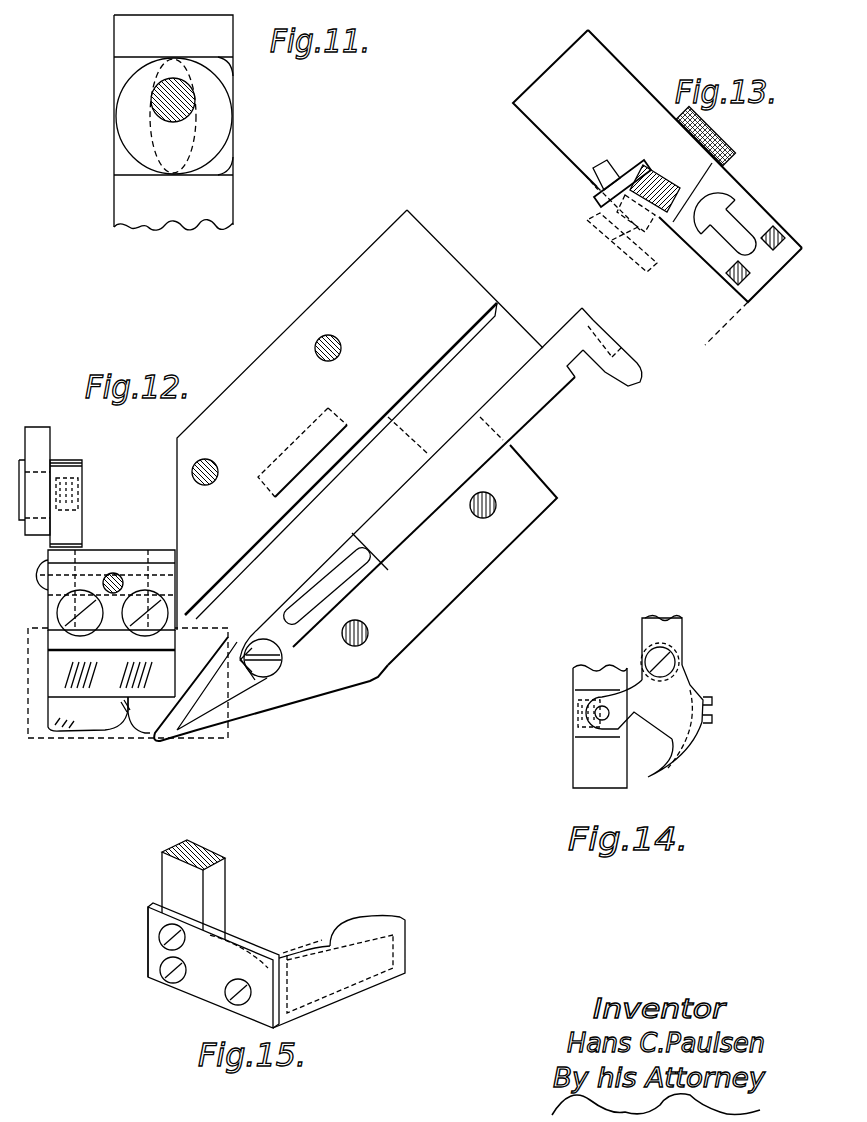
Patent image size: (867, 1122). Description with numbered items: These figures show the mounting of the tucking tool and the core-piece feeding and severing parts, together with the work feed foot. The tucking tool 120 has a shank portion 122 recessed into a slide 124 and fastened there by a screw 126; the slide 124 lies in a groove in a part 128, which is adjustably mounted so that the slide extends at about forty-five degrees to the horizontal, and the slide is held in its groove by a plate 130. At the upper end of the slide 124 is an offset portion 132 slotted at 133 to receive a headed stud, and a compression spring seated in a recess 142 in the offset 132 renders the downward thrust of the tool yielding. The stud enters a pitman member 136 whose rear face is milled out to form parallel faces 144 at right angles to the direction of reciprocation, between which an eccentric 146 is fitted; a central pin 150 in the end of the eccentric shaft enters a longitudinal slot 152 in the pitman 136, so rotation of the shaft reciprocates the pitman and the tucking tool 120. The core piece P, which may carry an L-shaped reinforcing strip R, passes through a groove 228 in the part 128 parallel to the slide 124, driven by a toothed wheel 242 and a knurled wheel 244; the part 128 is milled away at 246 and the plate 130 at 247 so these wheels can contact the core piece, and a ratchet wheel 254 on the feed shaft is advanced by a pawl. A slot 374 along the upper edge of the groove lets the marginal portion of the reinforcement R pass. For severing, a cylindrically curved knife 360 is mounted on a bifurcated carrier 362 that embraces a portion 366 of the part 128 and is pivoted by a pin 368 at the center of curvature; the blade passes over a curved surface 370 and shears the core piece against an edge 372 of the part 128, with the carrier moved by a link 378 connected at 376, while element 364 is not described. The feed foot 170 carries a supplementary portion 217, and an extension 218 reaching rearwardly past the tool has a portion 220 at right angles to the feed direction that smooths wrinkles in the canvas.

In FIG. 11, the pitman member 136 is at (222, 202).
In FIG. 11, the parallel faces 144 is at (233, 72).
In FIG. 11, the eccentric 146 is at (125, 107).
In FIG. 11, the central pin 150 is at (196, 104).
In FIG. 11, the longitudinal slot 152 is at (158, 143).
In FIG. 12, the tucking tool 120 is at (190, 707).
In FIG. 12, the shank portion 122 is at (335, 597).
In FIG. 12, the slide 124 is at (412, 531).
In FIG. 12, the screw 126 is at (270, 668).
In FIG. 13, the part 128 is at (712, 165).
In FIG. 12, the part 128 is at (470, 570).
In FIG. 14, the part 128 is at (582, 755).
In FIG. 13, the plate 130 is at (717, 298).
In FIG. 13, the offset portion 132 is at (755, 222).
In FIG. 12, the offset portion 132 is at (627, 363).
In FIG. 13, the slot 133 is at (748, 250).
In FIG. 13, the recess 142 is at (693, 258).
In FIG. 12, the recess 142 is at (604, 367).
In FIG. 15, the feed foot 170 is at (213, 895).
In FIG. 15, the supplementary feed portion 217 is at (210, 980).
In FIG. 15, the extension 218 is at (340, 983).
In FIG. 15, the portion 220 is at (360, 930).
In FIG. 13, the groove 228 is at (648, 157).
In FIG. 12, the groove 228 is at (508, 338).
In FIG. 13, the toothed wheel 242 is at (597, 239).
In FIG. 13, the knurled wheel 244 is at (720, 137).
In FIG. 12, the milled-away portion 246 is at (362, 478).
In FIG. 13, the milled-away portion 247 is at (593, 212).
In FIG. 13, the ratchet wheel 254 is at (590, 183).
In FIG. 12, the knife 360 is at (84, 712).
In FIG. 14, the knife 360 is at (653, 775).
In FIG. 12, the carrier 362 is at (158, 557).
In FIG. 14, the carrier 362 is at (660, 695).
In FIG. 12, the tab 364 is at (160, 672).
In FIG. 14, the tab 364 is at (692, 727).
In FIG. 12, the portion 366 is at (124, 566).
In FIG. 14, the portion 366 is at (583, 693).
In FIG. 12, the pin 368 is at (44, 560).
In FIG. 14, the pin 368 is at (600, 712).
In FIG. 14, the curved surface 370 is at (583, 790).
In FIG. 12, the edge 372 is at (107, 740).
In FIG. 14, the edge 372 is at (623, 787).
In FIG. 13, the slot 374 is at (616, 223).
In FIG. 12, the connection 376 is at (66, 488).
In FIG. 14, the connection 376 is at (643, 663).
In FIG. 12, the link 378 is at (42, 441).
In FIG. 14, the link 378 is at (670, 632).
In FIG. 13, the core piece P is at (675, 187).
In FIG. 13, the L-shaped strip R is at (600, 203).